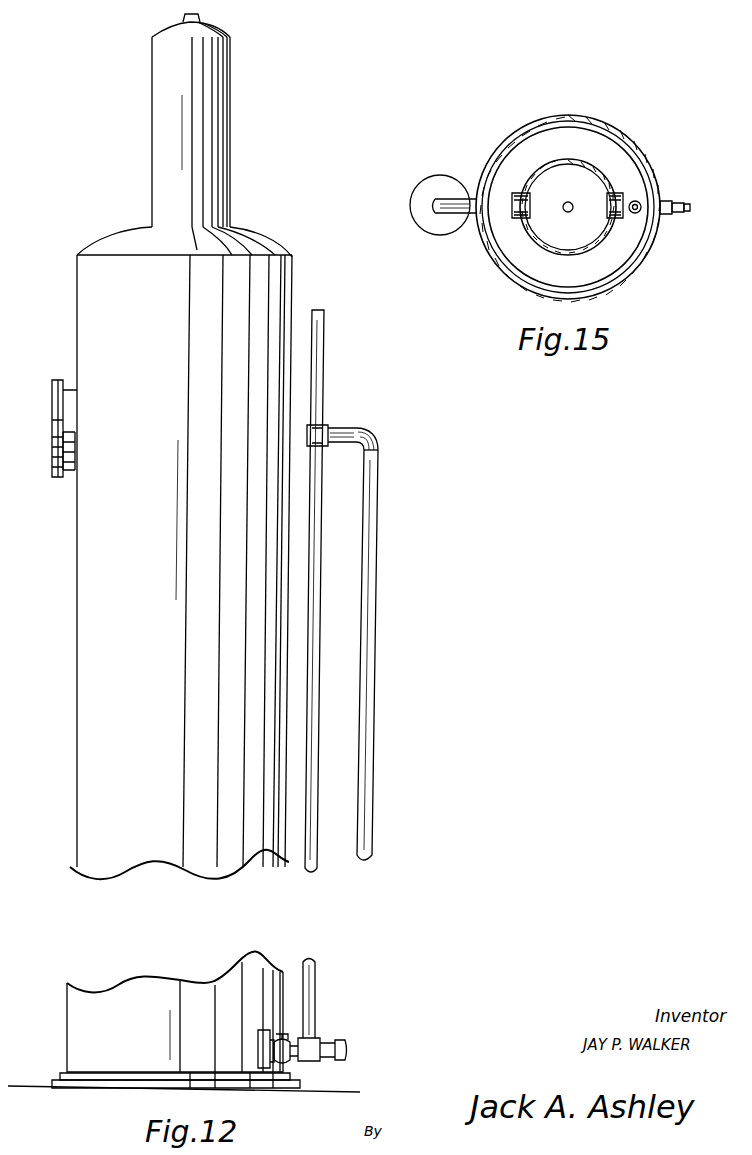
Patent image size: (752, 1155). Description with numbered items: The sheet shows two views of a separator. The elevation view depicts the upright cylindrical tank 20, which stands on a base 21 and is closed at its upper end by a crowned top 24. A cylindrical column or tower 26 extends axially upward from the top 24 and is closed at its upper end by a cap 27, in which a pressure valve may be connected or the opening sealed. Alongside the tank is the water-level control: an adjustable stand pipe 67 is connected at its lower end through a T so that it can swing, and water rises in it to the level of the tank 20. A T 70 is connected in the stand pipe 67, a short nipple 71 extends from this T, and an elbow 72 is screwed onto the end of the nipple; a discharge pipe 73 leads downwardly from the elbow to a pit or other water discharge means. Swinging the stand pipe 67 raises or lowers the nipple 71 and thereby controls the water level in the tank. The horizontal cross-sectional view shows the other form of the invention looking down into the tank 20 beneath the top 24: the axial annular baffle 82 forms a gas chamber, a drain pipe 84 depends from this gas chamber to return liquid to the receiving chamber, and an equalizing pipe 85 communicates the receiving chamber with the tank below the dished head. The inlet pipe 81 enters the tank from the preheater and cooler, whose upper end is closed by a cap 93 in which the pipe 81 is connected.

In FIG. 12, the tank 20 is at (77, 312).
In FIG. 15, the tank 20 is at (641, 154).
In FIG. 12, the base 21 is at (62, 1072).
In FIG. 12, the crowned top 24 is at (249, 233).
In FIG. 15, the crowned top 24 is at (503, 138).
In FIG. 12, the tower 26 is at (215, 116).
In FIG. 12, the cap 27 is at (150, 33).
In FIG. 12, the stand pipe 67 is at (311, 703).
In FIG. 15, the stand pipe 67 is at (670, 216).
In FIG. 12, the T 70 is at (320, 430).
In FIG. 12, the nipple 71 is at (342, 444).
In FIG. 12, the elbow 72 is at (376, 438).
In FIG. 12, the discharge pipe 73 is at (370, 607).
In FIG. 15, the inlet pipe 81 is at (462, 215).
In FIG. 15, the annular baffle 82 is at (565, 167).
In FIG. 15, the drain pipe 84 is at (568, 202).
In FIG. 15, the equalizing pipe 85 is at (634, 214).
In FIG. 15, the cap 93 is at (432, 220).